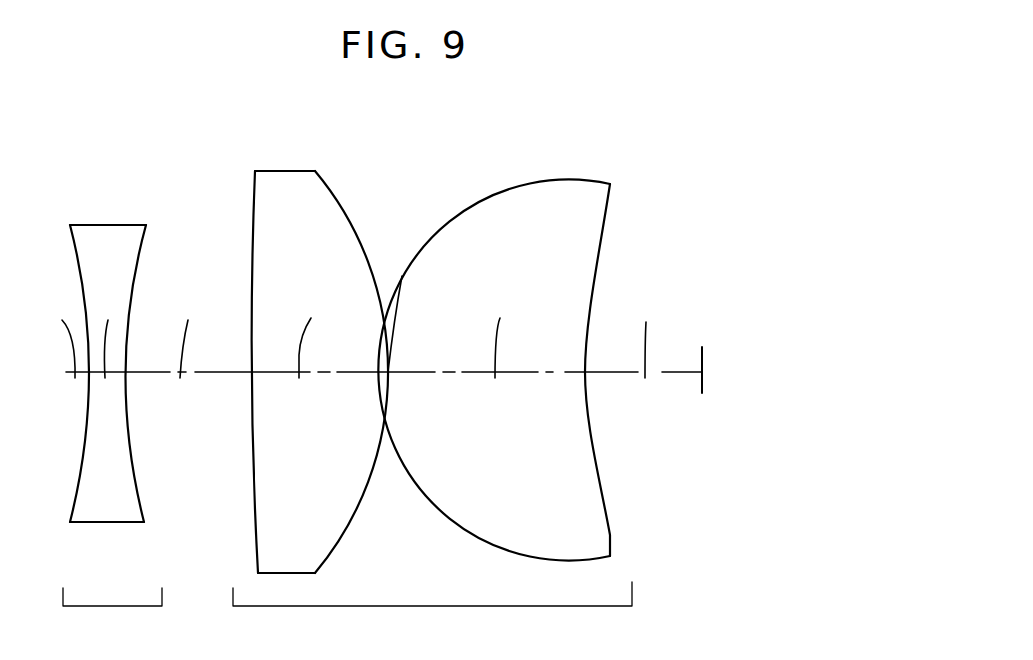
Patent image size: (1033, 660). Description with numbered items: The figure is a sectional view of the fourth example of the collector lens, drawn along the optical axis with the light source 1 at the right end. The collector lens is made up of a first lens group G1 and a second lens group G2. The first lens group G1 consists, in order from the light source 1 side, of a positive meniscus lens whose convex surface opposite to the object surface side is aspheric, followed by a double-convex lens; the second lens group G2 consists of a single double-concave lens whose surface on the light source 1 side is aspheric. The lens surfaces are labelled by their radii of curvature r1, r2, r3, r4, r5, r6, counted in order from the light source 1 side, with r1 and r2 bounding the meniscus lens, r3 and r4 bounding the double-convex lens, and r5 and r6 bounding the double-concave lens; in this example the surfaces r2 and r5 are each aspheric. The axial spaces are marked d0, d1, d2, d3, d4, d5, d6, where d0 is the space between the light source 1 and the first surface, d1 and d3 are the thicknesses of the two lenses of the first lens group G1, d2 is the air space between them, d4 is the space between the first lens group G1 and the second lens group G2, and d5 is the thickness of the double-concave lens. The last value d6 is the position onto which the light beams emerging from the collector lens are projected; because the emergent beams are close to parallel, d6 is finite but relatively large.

The light source 1 is at (704, 352).
The first lens group G1 is at (424, 381).
The second lens group G2 is at (108, 404).
The radius of curvature of first lens surface r1 is at (609, 236).
The radius of curvature of second lens surface r2 is at (508, 210).
The radius of curvature of third lens surface r3 is at (341, 201).
The radius of curvature of fourth lens surface r4 is at (250, 218).
The radius of curvature of fifth lens surface r5 is at (138, 258).
The radius of curvature of sixth lens surface r6 is at (72, 262).
The space between light source and first surface d0 is at (655, 333).
The space between first and second lens surfaces d1 is at (509, 333).
The space between second and third lens surfaces d2 is at (400, 308).
The space between third and fourth lens surfaces d3 is at (315, 333).
The space between fourth and fifth lens surfaces d4 is at (192, 333).
The space between fifth and sixth lens surfaces d5 is at (108, 333).
The projection position of emergent light beams d6 is at (55, 333).